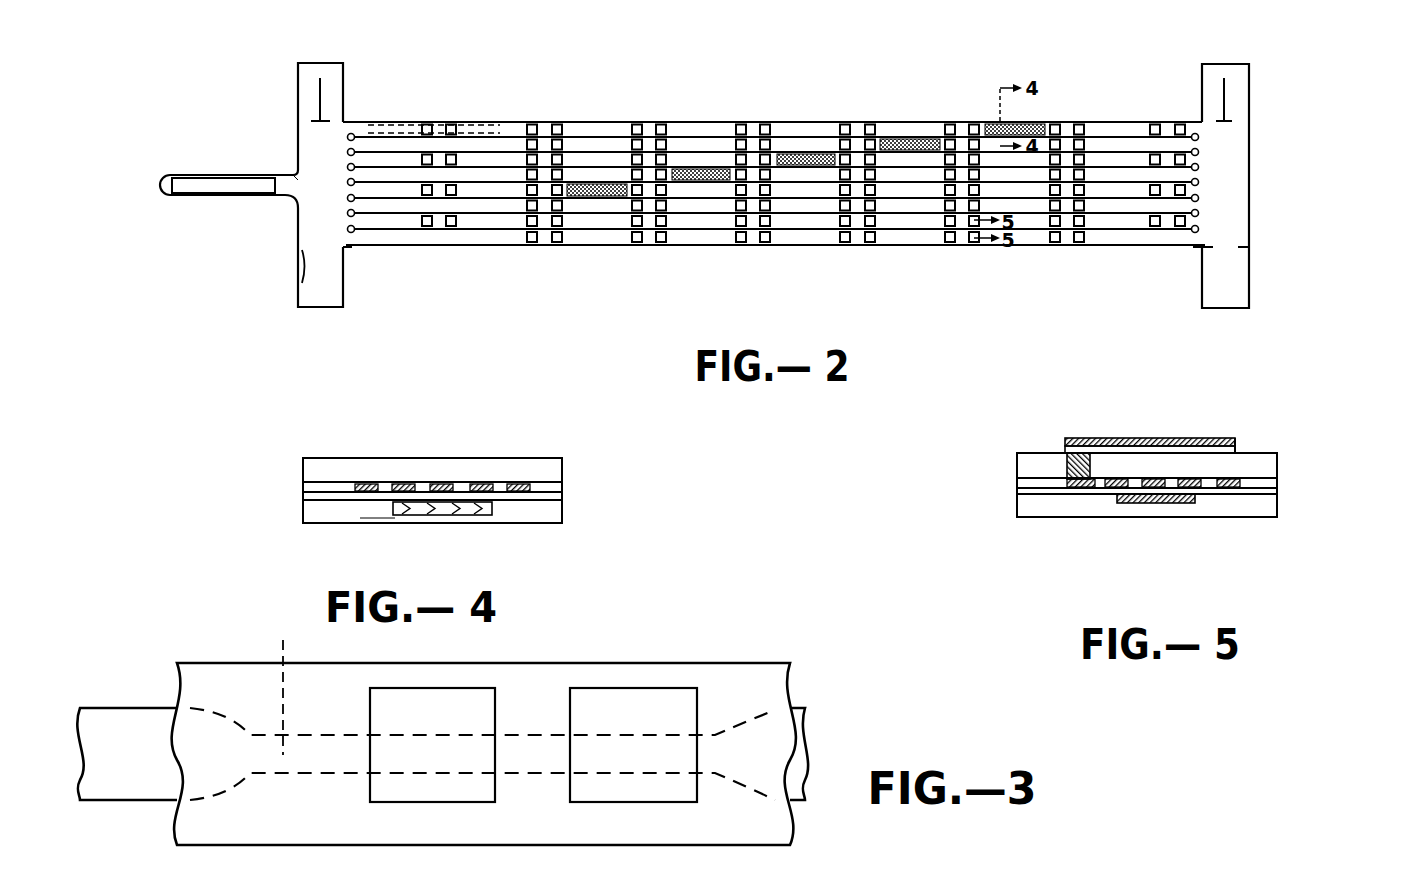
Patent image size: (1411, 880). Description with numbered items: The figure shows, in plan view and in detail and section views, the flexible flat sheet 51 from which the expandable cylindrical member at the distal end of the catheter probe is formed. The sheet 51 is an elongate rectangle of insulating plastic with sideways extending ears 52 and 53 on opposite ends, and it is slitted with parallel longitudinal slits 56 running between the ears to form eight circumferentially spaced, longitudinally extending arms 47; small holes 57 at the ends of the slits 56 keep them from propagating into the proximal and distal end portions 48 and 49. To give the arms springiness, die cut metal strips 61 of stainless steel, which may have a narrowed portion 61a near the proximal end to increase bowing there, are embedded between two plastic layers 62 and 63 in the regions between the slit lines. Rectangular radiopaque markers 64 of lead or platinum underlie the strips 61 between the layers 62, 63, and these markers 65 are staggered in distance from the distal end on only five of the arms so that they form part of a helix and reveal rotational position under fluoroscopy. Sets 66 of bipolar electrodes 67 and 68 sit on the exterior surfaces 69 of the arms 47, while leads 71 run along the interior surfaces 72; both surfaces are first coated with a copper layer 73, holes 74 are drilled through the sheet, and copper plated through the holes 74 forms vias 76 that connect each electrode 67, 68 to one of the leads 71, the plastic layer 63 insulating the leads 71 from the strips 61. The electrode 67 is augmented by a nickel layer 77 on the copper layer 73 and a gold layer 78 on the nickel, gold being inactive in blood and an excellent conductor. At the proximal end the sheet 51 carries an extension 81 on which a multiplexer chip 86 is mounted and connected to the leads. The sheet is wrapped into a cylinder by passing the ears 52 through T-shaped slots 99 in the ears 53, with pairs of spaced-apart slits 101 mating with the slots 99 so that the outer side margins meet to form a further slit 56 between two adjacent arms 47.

In FIG. 2, the arms 47 is at (690, 121).
In FIG. 4, the arms 47 is at (570, 448).
In FIG. 5, the arms 47 is at (1300, 448).
In FIG. 3, the arms 47 is at (210, 668).
In FIG. 2, the proximal extremity 48 is at (363, 120).
In FIG. 2, the distal extremity 49 is at (303, 188).
In FIG. 2, the flexible flat sheet 51 is at (650, 108).
In FIG. 2, the ears 52 is at (335, 297).
In FIG. 2, the ears 53 is at (343, 65).
In FIG. 2, the slits 56 is at (697, 225).
In FIG. 2, the small holes 57 is at (345, 213).
In FIG. 4, the metal strips 61 is at (372, 518).
In FIG. 5, the metal strips 61 is at (1153, 505).
In FIG. 3, the metal strips 61 is at (122, 725).
In FIG. 3, the narrowed portion 61a is at (274, 682).
In FIG. 4, the plastic layer 62 is at (548, 517).
In FIG. 5, the plastic layer 62 is at (1258, 508).
In FIG. 4, the plastic layer 63 is at (562, 494).
In FIG. 5, the plastic layer 63 is at (1265, 498).
In FIG. 2, the radiopaque markers 64 is at (915, 137).
In FIG. 4, the radiopaque markers 64 is at (562, 471).
In FIG. 5, the radiopaque markers 64 is at (1265, 468).
In FIG. 2, the markers 65 is at (718, 170).
In FIG. 4, the markers 65 is at (415, 505).
In FIG. 2, the sets of bipolar electrodes 66 is at (437, 108).
In FIG. 2, the bipolar electrode 67 is at (427, 124).
In FIG. 5, the bipolar electrode 67 is at (1248, 425).
In FIG. 3, the bipolar electrode 67 is at (480, 715).
In FIG. 2, the bipolar electrode 68 is at (452, 124).
In FIG. 3, the bipolar electrode 68 is at (665, 708).
In FIG. 4, the exterior surface 69 is at (327, 458).
In FIG. 5, the exterior surface 69 is at (1025, 452).
In FIG. 4, the leads 71 is at (443, 484).
In FIG. 5, the leads 71 is at (1205, 482).
In FIG. 5, the interior surface 72 is at (1263, 486).
In FIG. 5, the copper layer 73 is at (1065, 449).
In FIG. 5, the holes 74 is at (1067, 466).
In FIG. 5, the vias 76 is at (1092, 468).
In FIG. 5, the nickel layer 77 is at (1236, 447).
In FIG. 5, the gold layer 78 is at (1210, 438).
In FIG. 2, the extension 81 is at (163, 180).
In FIG. 2, the multiplexer chip 86 is at (208, 193).
In FIG. 2, the T-shaped slots 99 is at (318, 98).
In FIG. 2, the slits 101 is at (342, 252).